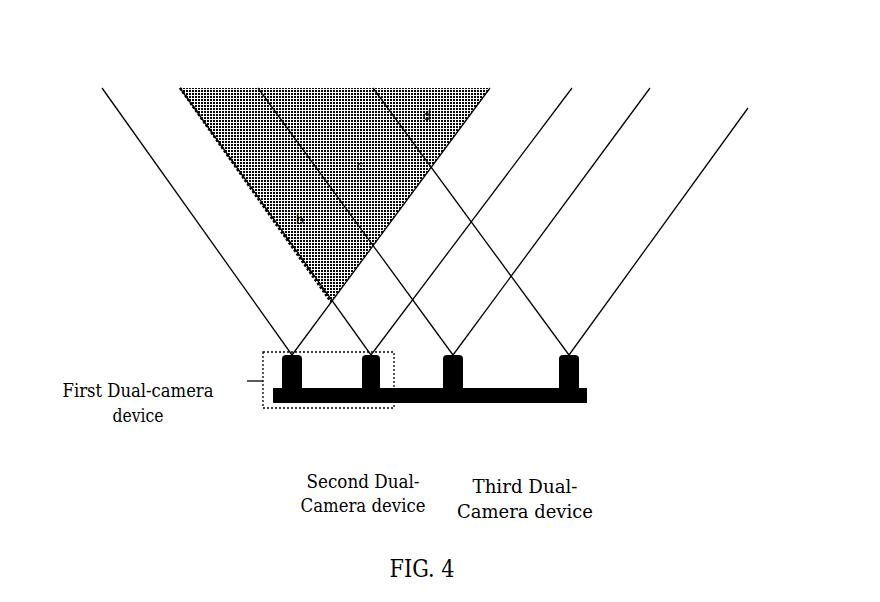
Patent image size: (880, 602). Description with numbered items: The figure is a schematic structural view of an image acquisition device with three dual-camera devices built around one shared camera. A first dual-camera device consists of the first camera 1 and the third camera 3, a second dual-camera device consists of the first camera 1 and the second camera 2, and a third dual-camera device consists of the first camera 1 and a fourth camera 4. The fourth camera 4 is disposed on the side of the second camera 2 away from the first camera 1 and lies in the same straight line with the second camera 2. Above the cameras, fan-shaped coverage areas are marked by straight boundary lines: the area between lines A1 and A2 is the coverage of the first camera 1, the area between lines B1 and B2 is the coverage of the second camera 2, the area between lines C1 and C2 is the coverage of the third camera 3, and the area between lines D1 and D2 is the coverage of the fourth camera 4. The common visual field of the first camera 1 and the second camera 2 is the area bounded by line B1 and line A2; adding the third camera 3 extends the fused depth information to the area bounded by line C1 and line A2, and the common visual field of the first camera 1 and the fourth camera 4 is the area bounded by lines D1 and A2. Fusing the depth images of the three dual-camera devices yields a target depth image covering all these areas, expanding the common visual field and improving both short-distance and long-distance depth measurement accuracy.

The first camera 1 is at (387, 410).
The second camera 2 is at (421, 408).
The third camera 3 is at (371, 395).
The fourth camera 4 is at (536, 410).
The straight line A1 is at (192, 207).
The straight line A2 is at (401, 207).
The straight line B1 is at (349, 207).
The straight line B2 is at (561, 206).
The straight line C1 is at (265, 207).
The straight line C2 is at (482, 207).
The straight line D1 is at (464, 207).
The straight line D2 is at (667, 212).